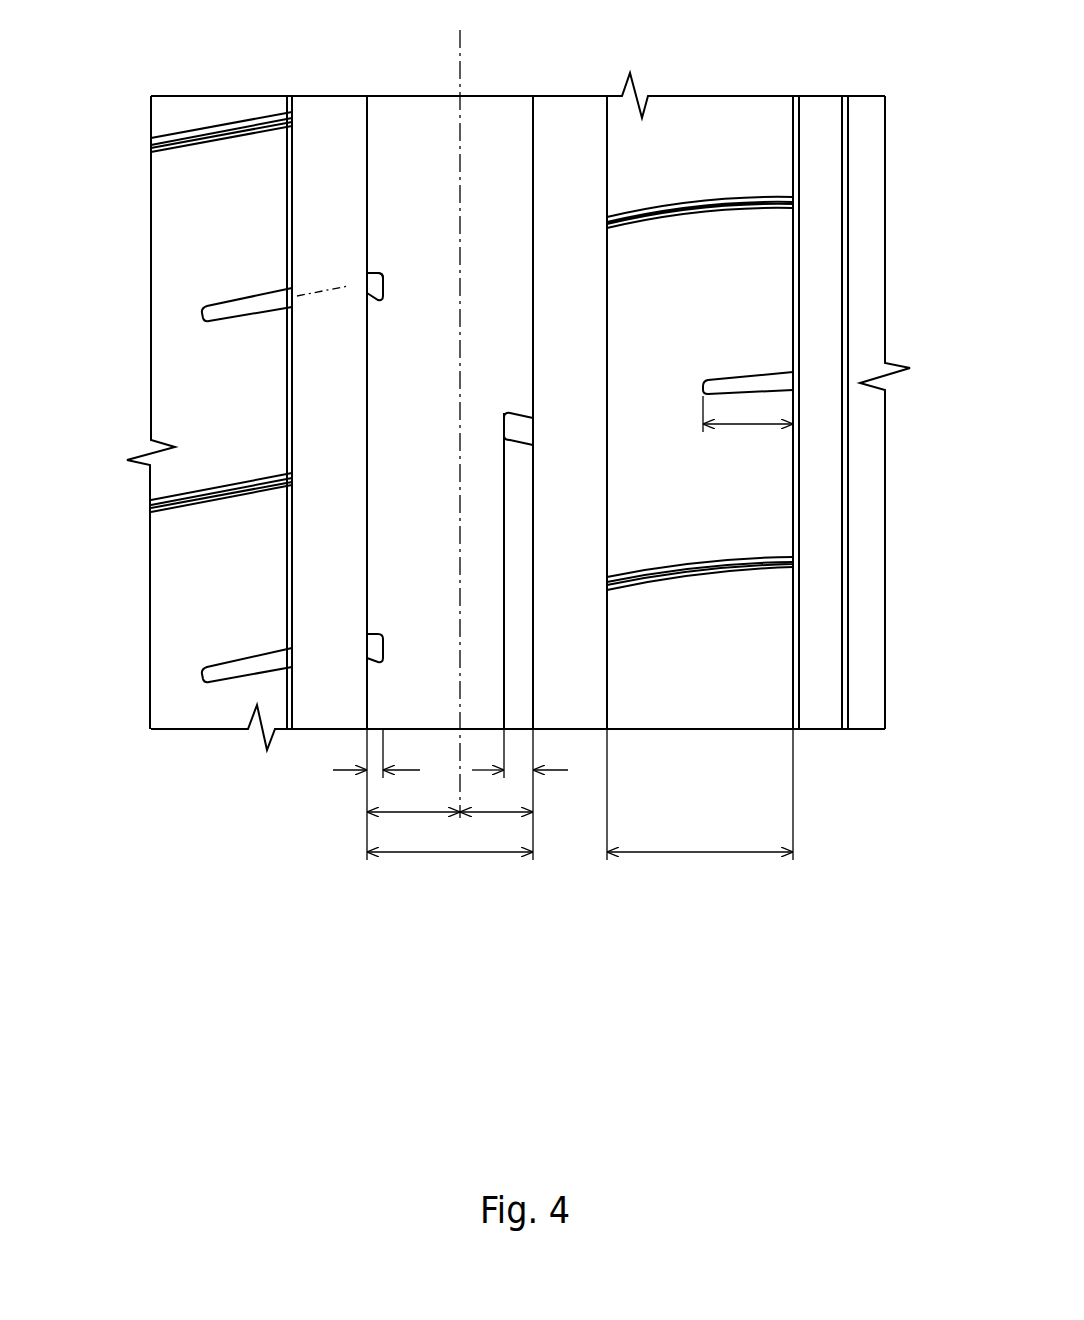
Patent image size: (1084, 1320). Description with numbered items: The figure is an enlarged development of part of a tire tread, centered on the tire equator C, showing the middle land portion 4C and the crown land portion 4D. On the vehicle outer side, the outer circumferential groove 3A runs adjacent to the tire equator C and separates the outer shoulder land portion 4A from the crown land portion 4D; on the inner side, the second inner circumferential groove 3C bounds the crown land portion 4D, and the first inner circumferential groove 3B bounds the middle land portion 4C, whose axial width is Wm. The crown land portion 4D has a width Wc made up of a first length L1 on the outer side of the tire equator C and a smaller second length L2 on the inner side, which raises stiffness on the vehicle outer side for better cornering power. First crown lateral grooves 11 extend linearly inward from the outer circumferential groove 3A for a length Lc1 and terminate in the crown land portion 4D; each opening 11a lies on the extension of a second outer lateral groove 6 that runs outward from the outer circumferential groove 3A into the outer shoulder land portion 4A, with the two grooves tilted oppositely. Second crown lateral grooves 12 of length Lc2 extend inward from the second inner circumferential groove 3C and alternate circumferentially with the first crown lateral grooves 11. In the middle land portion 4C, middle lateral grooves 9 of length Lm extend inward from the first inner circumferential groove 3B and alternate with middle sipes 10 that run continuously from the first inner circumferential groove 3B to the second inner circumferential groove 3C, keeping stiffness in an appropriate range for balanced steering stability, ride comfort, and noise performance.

The outer shoulder land portion 4A is at (185, 112).
The outer circumferential groove 3A is at (327, 108).
The crown land portion 4D is at (482, 120).
The second inner circumferential groove 3C is at (563, 123).
The middle land portion 4C is at (735, 115).
The first inner circumferential groove 3B is at (813, 120).
The tire equator C is at (458, 409).
The middle sipes 10 is at (762, 203).
The second outer lateral groove 6 is at (222, 305).
The first crown lateral grooves 11 is at (370, 293).
The opening 11a is at (365, 276).
The second crown lateral grooves 12 is at (524, 430).
The middle lateral grooves 9 is at (750, 385).
The length of middle lateral groove Lm is at (750, 420).
The length of first crown lateral groove Lc1 is at (377, 768).
The length of second crown lateral groove Lc2 is at (517, 768).
The first length L1 is at (413, 799).
The second length L2 is at (496, 799).
The width of crown land portion Wc is at (450, 841).
The width of middle land portion Wm is at (700, 794).